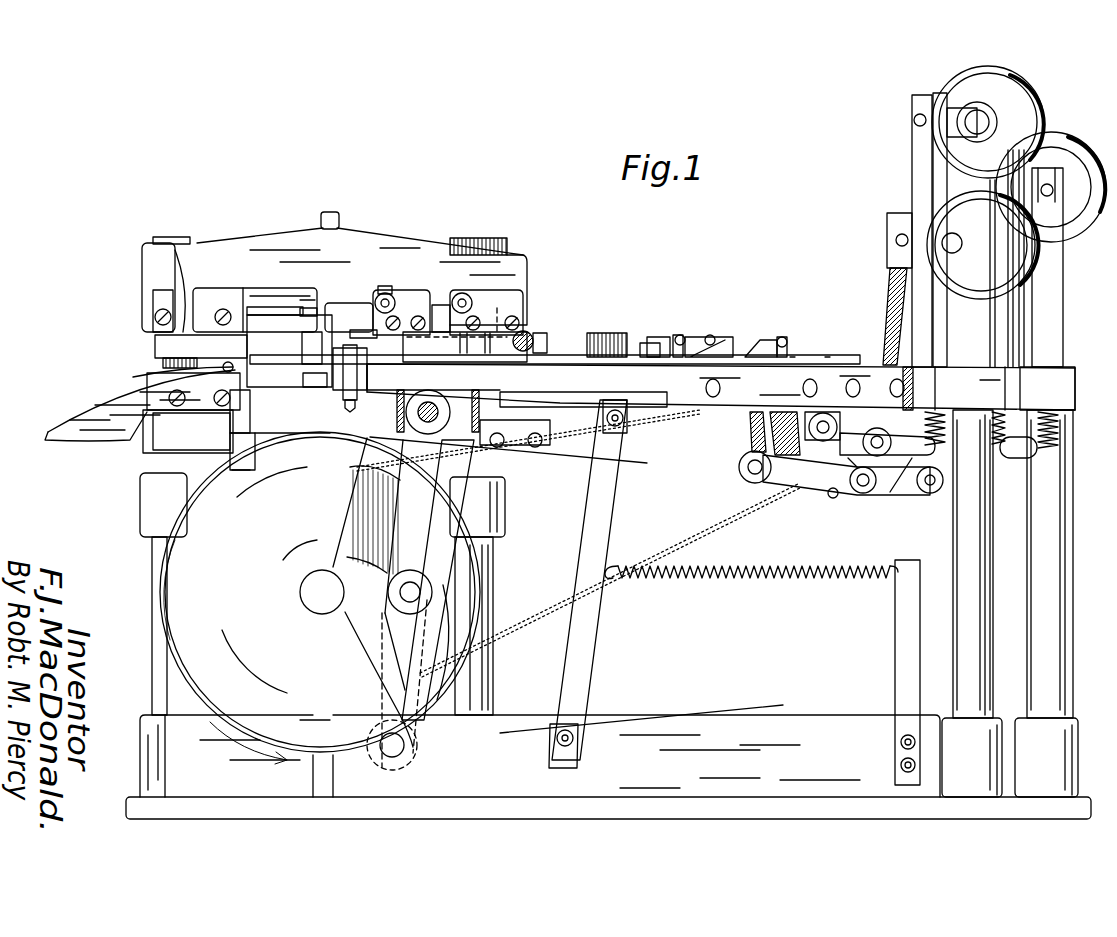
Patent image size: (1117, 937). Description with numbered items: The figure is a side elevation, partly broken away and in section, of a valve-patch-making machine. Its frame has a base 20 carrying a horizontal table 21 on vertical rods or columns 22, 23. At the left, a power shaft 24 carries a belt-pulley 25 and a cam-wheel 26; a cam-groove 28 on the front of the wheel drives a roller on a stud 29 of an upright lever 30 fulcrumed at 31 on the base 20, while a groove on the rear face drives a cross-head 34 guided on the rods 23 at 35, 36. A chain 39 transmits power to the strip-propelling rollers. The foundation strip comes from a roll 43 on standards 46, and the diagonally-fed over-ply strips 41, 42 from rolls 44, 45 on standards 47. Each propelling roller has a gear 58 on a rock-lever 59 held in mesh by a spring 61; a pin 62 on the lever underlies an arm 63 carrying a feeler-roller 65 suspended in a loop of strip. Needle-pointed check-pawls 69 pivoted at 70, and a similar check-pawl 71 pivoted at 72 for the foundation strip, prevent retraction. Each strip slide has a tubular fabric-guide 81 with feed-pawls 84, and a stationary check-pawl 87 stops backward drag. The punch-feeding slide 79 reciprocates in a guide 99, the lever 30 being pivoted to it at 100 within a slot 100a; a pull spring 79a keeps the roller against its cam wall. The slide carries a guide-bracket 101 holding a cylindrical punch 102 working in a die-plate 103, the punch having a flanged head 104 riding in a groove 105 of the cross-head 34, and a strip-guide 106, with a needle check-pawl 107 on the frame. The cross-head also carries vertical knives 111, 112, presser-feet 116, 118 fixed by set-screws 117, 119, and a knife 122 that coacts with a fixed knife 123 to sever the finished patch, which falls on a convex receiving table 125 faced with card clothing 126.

The base 20 is at (818, 730).
The horizontal table 21 is at (1055, 385).
The vertical rods or columns 22 is at (1050, 555).
The vertical rods or columns 23 is at (152, 553).
The power shaft 24 is at (308, 600).
The belt-pulley 25 is at (165, 608).
The cam-wheel 26 is at (445, 622).
The cam-groove 28 is at (345, 526).
The stud 29 is at (404, 600).
The upright lever 30 is at (445, 523).
The fulcrum 31 is at (405, 765).
The cross-head 34 is at (350, 245).
The cross-head guide 35 is at (140, 492).
The cross-head guide 36 is at (142, 268).
The chain 39 is at (550, 610).
The over-ply strip 41 is at (760, 435).
The over-ply strip 42 is at (760, 422).
The roll 43 is at (1063, 150).
The roll 44 is at (945, 80).
The roll 45 is at (962, 205).
The standards 46 is at (1050, 315).
The standards 47 is at (940, 345).
The gear 58 is at (860, 405).
The rock-lever 59 is at (860, 495).
The spring 61 is at (938, 410).
The pin 62 is at (826, 495).
The arm 63 is at (812, 480).
The feeler-roller 65 is at (760, 480).
The check-pawls 69 is at (668, 345).
The pivots 70 is at (680, 332).
The check-pawl 71 is at (765, 338).
The pivot 72 is at (786, 338).
The punch-feeding slide 79 is at (320, 420).
The pull spring 79a is at (705, 580).
The tubular fabric-guide 81 is at (530, 345).
The feed-pawls 84 is at (650, 345).
The check-pawl 87 is at (600, 340).
The guide 99 is at (520, 440).
The pivot 100 is at (418, 438).
The slot 100a is at (420, 390).
The guide-bracket 101 is at (302, 346).
The cylindrical punch 102 is at (305, 323).
The die-plate 103 is at (313, 388).
The flanged head 104 is at (315, 305).
The groove 105 is at (280, 305).
The strip-guide 106 is at (275, 440).
The needle check-pawl 107 is at (215, 344).
The vertical knife 111 is at (500, 340).
The vertical knife 112 is at (408, 300).
The presser-foot 116 is at (500, 318).
The set-screw 117 is at (480, 300).
The presser-foot 118 is at (358, 328).
The set-screw 119 is at (390, 293).
The vertical knife 122 is at (185, 322).
The fixed vertical knife 123 is at (240, 375).
The convex receiving table 125 is at (70, 405).
The card clothing 126 is at (125, 380).